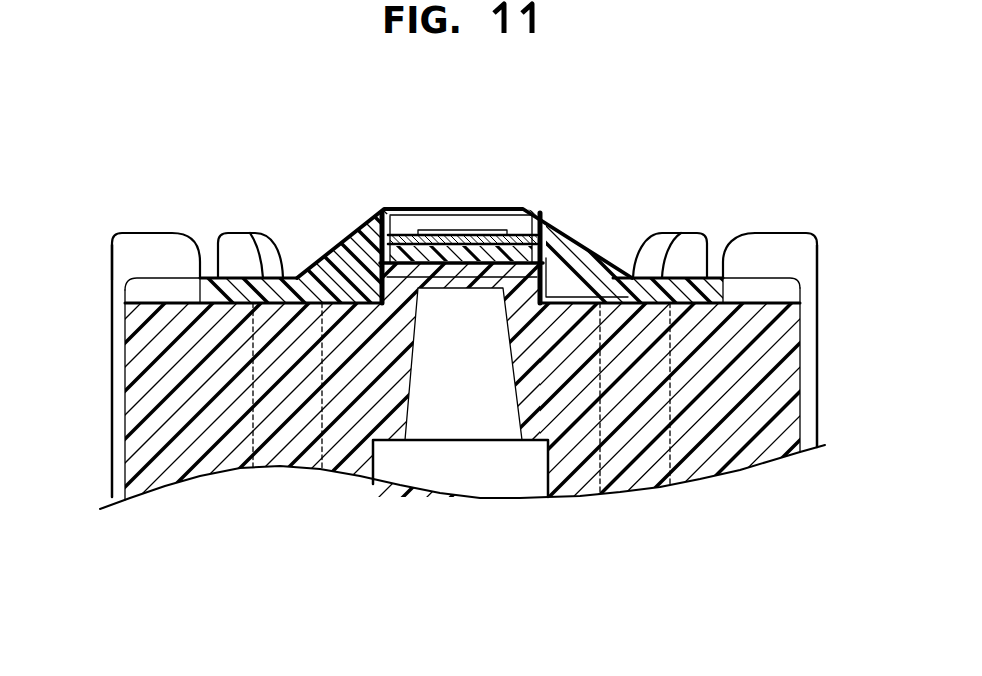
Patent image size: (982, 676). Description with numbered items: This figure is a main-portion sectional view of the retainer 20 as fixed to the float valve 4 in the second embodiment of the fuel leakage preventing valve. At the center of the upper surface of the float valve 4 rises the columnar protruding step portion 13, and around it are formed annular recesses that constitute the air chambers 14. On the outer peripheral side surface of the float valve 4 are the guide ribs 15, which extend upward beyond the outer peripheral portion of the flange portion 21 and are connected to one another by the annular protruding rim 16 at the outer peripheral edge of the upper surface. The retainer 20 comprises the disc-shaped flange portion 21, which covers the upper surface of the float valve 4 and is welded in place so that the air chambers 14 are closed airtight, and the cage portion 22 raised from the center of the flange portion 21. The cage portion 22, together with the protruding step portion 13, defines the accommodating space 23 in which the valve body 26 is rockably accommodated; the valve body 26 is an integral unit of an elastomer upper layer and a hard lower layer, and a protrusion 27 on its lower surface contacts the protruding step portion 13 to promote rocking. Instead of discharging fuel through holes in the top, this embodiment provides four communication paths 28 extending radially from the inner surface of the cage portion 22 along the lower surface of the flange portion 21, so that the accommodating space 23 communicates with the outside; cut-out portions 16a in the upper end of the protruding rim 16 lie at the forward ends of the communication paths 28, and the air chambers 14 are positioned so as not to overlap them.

The float valve 4 is at (178, 453).
The protruding step portion 13 is at (513, 257).
The air chambers 14 is at (322, 425).
The guide ribs 15 is at (143, 237).
The protruding rim 16 is at (190, 279).
The cut-out portions 16a is at (160, 299).
The retainer 20 is at (366, 208).
The flange portion 21 is at (687, 288).
The cage portion 22 is at (546, 225).
The accommodating space 23 is at (406, 220).
The valve body 26 is at (475, 236).
The protrusion 27 is at (467, 289).
The communication paths 28 is at (300, 300).